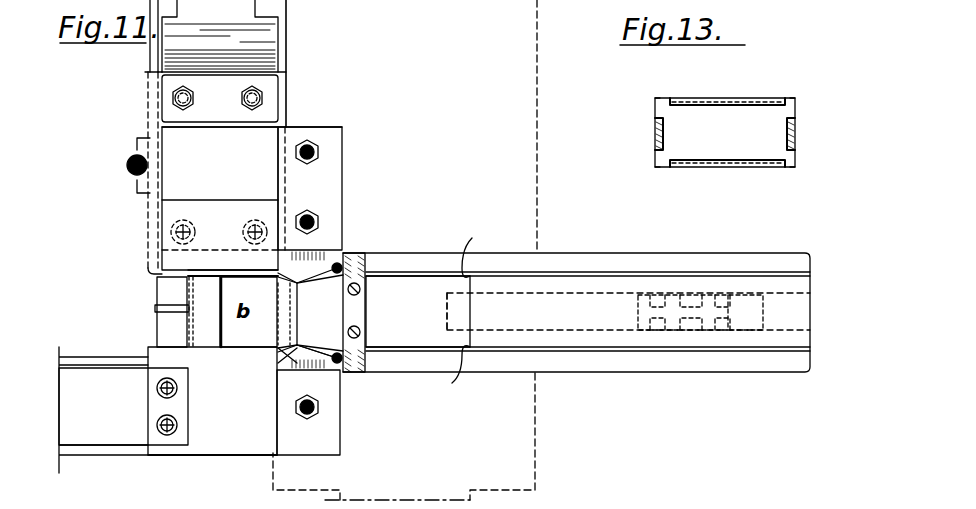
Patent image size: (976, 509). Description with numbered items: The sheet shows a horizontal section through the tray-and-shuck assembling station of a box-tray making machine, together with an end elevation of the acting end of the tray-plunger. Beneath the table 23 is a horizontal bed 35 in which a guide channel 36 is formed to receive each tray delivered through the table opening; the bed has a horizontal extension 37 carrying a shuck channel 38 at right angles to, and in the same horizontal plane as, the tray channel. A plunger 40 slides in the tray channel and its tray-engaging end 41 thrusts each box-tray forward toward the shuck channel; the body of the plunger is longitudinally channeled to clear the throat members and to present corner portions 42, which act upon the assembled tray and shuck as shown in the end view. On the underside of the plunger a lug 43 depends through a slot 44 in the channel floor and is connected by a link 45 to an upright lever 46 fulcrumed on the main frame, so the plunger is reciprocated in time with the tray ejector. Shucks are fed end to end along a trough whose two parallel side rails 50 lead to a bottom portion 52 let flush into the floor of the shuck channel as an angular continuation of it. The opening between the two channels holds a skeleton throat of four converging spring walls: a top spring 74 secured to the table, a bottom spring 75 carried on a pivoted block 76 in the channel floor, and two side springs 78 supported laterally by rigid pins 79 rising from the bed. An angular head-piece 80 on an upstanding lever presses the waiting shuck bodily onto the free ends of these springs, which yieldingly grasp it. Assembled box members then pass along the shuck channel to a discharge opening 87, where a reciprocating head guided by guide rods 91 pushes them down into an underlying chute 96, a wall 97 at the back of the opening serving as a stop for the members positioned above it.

In FIG. 11, the table 23 is at (542, 12).
In FIG. 11, the horizontal bed 35 is at (783, 234).
In FIG. 11, the guide channel 36 is at (418, 311).
In FIG. 11, the horizontal extension 37 is at (210, 457).
In FIG. 11, the shuck channel 38 is at (213, 327).
In FIG. 11, the plunger 40 is at (628, 311).
In FIG. 11, the tray-engaging end 41 is at (475, 305).
In FIG. 13, the tray-engaging end 41 is at (725, 132).
In FIG. 11, the corner portions 42 is at (463, 309).
In FIG. 13, the corner portions 42 is at (655, 98).
In FIG. 11, the lug 43 is at (682, 347).
In FIG. 11, the slot 44 is at (590, 335).
In FIG. 11, the link 45 is at (699, 305).
In FIG. 11, the upright lever 46 is at (760, 347).
In FIG. 11, the side rails 50 is at (79, 357).
In FIG. 11, the bottom portion 52 is at (123, 406).
In FIG. 13, the top spring 74 is at (722, 98).
In FIG. 11, the bottom spring 75 is at (310, 312).
In FIG. 13, the bottom spring 75 is at (735, 168).
In FIG. 11, the block 76 is at (368, 272).
In FIG. 11, the side springs 78 is at (336, 260).
In FIG. 13, the side springs 78 is at (655, 132).
In FIG. 11, the rigid pins 79 is at (336, 262).
In FIG. 11, the angular head-piece 80 is at (172, 290).
In FIG. 11, the opening 87 is at (220, 198).
In FIG. 11, the guide rods 91 is at (127, 163).
In FIG. 11, the chute 96 is at (293, 23).
In FIG. 11, the wall 97 is at (269, 126).